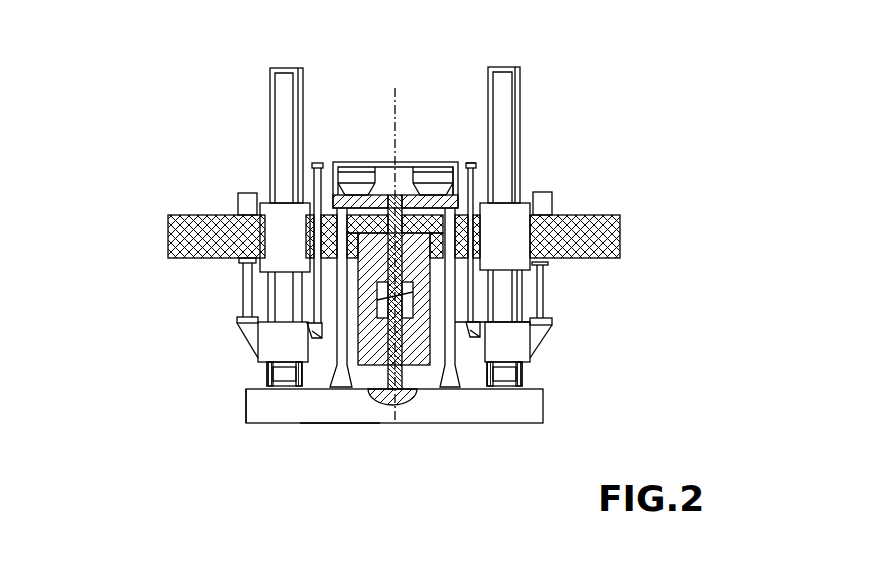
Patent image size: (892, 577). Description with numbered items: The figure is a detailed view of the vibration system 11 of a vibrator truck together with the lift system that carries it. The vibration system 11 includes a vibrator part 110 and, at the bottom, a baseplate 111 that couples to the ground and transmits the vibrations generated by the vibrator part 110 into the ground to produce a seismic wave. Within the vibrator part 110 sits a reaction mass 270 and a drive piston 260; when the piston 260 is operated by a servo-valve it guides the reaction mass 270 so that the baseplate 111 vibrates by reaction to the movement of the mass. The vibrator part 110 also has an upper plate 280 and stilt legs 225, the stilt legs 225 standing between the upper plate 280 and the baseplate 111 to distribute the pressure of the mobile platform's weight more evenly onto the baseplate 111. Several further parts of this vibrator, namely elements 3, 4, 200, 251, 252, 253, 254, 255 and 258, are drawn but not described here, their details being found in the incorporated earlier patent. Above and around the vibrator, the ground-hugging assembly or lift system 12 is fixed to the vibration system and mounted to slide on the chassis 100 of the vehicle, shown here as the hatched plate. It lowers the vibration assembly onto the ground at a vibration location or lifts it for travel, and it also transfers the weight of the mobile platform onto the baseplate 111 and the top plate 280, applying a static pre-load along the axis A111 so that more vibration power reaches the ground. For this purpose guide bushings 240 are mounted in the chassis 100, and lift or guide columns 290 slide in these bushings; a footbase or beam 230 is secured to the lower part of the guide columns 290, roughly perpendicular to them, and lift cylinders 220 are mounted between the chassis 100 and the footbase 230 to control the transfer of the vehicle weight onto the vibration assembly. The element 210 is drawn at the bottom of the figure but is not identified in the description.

The chassis 100 is at (599, 227).
The ground-hugging assembly/lift system 12 is at (228, 263).
The vibration system 11 is at (220, 393).
The baseplate 111 is at (338, 431).
The vibrator part 110 is at (447, 122).
The axis A111 is at (396, 104).
The element 200 is at (260, 155).
The lift (guide) columns 290 is at (505, 95).
The element 3 is at (318, 163).
The element 4 is at (310, 337).
The element 251 is at (333, 178).
The element 258 is at (434, 158).
The element 254 is at (466, 167).
The element 253 is at (456, 180).
The upper plate 280 is at (476, 200).
The guide bushings 240 is at (257, 282).
The drive piston 260 is at (335, 299).
The reaction mass 270 is at (360, 347).
The stilt legs 225 is at (456, 275).
The lift cylinders 220 is at (545, 299).
The footbase 230 is at (548, 328).
The element 255 is at (532, 345).
The element 252 is at (524, 368).
The base plate 210 is at (522, 408).